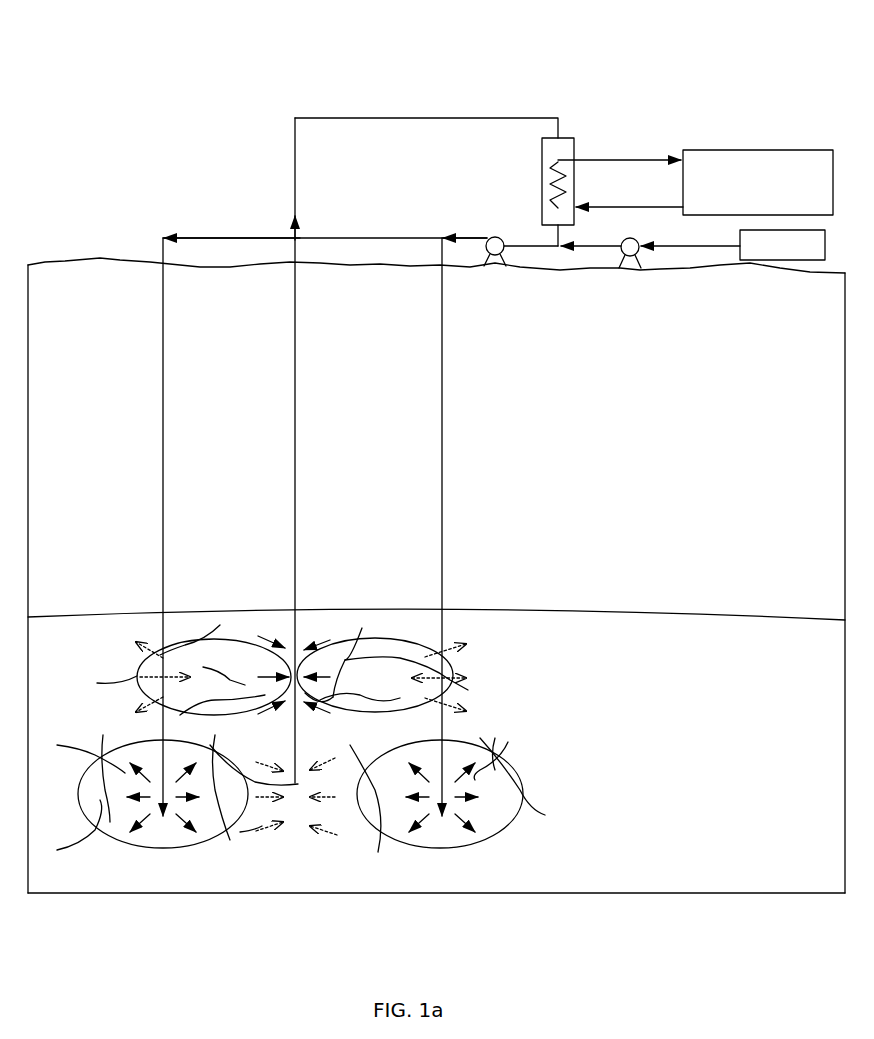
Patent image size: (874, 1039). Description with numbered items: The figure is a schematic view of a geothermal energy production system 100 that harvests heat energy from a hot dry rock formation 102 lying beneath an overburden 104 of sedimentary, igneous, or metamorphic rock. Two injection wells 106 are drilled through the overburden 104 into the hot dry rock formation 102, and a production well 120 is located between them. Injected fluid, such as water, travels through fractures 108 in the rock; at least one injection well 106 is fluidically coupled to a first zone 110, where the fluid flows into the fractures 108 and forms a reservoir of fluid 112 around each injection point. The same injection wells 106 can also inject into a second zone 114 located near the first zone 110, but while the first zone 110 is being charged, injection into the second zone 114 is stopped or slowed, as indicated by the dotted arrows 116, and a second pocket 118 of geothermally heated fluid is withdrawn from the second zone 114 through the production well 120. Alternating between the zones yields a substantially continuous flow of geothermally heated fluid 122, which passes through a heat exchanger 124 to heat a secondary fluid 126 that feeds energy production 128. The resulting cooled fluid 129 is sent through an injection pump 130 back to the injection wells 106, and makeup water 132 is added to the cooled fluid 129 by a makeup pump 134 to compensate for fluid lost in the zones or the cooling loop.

The energy production system 100 is at (519, 46).
The hot dry rock formation 102 is at (803, 668).
The overburden 104 is at (803, 338).
The injection wells 106 is at (163, 485).
The fractures 108 is at (112, 682).
The first zone 110 is at (570, 753).
The reservoir of fluid 112 is at (163, 848).
The second zone 114 is at (515, 643).
The dotted arrows 116 is at (147, 634).
The second pocket 118 is at (227, 640).
The production well 120 is at (295, 485).
The geothermally heated fluid 122 is at (404, 114).
The heat exchanger 124 is at (569, 138).
The secondary fluid 126 is at (660, 158).
The energy production 128 is at (760, 150).
The cooled fluid 129 is at (533, 245).
The injection pump 130 is at (495, 237).
The water 132 is at (765, 262).
The makeup pump 134 is at (630, 238).